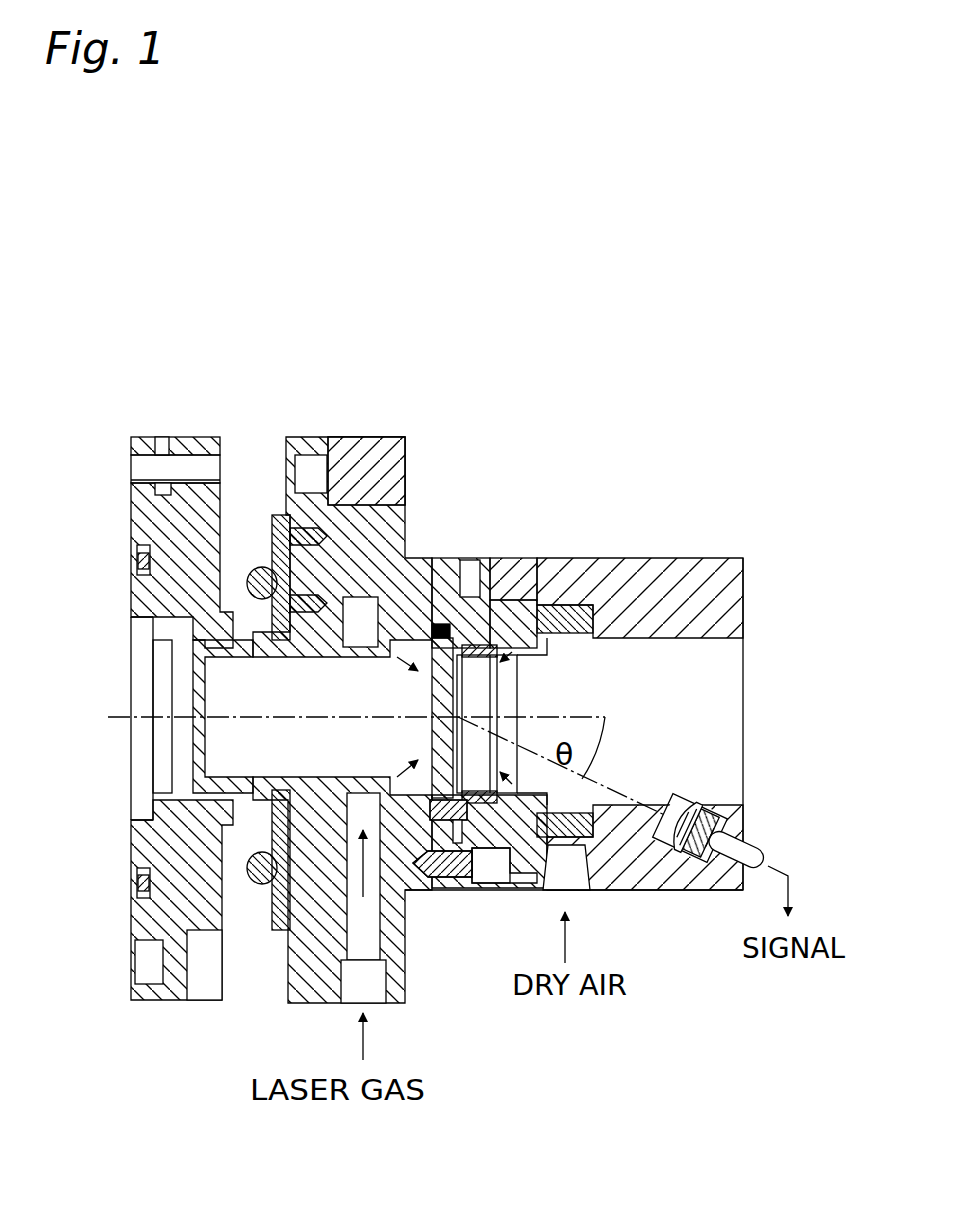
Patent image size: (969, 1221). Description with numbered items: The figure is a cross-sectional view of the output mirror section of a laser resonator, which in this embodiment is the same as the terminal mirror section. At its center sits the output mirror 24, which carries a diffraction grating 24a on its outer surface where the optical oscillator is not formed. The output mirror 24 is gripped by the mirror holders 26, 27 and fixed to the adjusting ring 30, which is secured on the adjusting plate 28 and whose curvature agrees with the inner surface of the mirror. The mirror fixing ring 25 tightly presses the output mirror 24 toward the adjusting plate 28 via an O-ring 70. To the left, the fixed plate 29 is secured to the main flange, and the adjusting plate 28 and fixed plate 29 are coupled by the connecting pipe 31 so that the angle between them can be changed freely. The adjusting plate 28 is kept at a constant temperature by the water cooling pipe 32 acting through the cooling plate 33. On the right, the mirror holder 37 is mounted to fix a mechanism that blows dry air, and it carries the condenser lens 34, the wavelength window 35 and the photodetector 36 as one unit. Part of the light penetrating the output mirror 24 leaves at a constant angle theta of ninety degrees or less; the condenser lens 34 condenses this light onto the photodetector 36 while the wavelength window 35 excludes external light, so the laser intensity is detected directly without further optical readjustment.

The output mirror 24 is at (443, 702).
The diffraction grating 24a is at (507, 884).
The mirror fixing ring 25 is at (545, 605).
The mirror holder 26 is at (500, 558).
The mirror holder 27 is at (463, 558).
The adjusting plate 28 is at (322, 437).
The fixed plate 29 is at (146, 438).
The adjusting ring 30 is at (490, 632).
The connecting pipe 31 is at (280, 805).
The water cooling pipe 32 is at (255, 884).
The cooling plate 33 is at (275, 512).
The condenser lens 34 is at (705, 808).
The wavelength window 35 is at (703, 842).
The photodetector 36 is at (722, 818).
The mirror holder 37 is at (607, 558).
The O-ring 70 is at (437, 624).